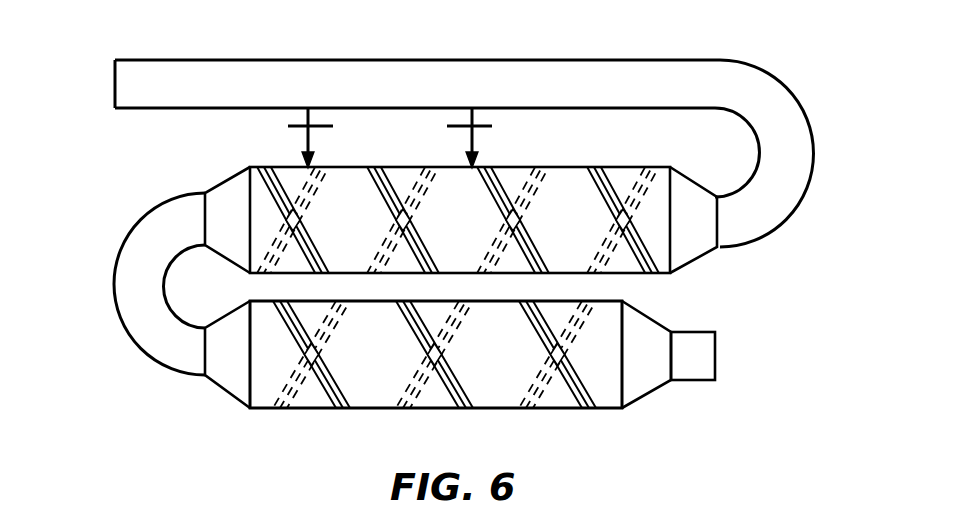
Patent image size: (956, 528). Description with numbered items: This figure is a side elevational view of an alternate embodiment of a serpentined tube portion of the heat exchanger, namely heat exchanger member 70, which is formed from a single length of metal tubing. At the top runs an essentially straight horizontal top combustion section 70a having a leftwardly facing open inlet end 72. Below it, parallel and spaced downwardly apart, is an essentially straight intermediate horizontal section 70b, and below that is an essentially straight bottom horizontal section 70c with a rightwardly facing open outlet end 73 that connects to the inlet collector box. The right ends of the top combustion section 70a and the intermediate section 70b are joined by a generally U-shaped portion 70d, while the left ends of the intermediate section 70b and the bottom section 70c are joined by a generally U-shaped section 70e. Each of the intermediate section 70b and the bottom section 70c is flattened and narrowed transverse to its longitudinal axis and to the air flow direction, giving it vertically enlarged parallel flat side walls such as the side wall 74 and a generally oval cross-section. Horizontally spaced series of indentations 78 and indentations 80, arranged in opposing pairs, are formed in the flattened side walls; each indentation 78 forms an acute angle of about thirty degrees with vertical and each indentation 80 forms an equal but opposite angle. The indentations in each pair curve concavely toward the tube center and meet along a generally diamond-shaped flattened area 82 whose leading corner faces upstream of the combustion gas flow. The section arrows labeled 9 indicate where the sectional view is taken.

The heat exchanger member 70 is at (373, 46).
The top combustion section 70a is at (547, 58).
The intermediate horizontal section 70b is at (562, 165).
The bottom horizontal section 70c is at (497, 408).
The U-shaped portion 70d is at (805, 141).
The U-shaped section 70e is at (115, 282).
The inlet end 72 is at (115, 78).
The outlet end 73 is at (715, 352).
The flat side wall 74 is at (372, 410).
The indentations 78 is at (388, 167).
The indentations 80 is at (427, 198).
The diamond-shaped flattened area 82 is at (273, 220).
The section line for FIG. 9 is at (390, 138).